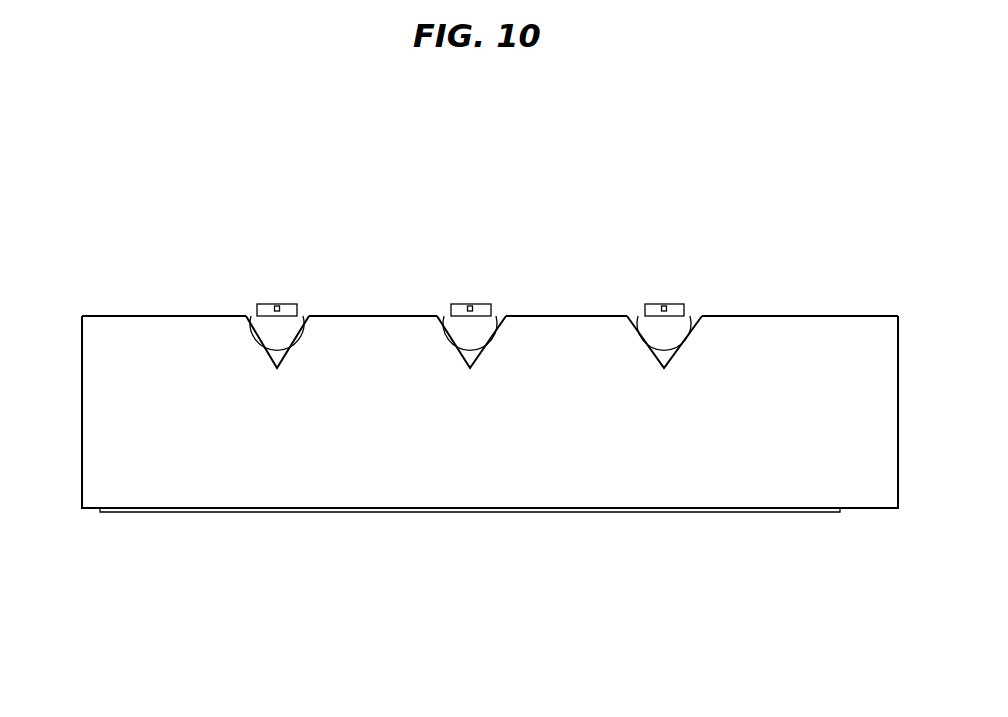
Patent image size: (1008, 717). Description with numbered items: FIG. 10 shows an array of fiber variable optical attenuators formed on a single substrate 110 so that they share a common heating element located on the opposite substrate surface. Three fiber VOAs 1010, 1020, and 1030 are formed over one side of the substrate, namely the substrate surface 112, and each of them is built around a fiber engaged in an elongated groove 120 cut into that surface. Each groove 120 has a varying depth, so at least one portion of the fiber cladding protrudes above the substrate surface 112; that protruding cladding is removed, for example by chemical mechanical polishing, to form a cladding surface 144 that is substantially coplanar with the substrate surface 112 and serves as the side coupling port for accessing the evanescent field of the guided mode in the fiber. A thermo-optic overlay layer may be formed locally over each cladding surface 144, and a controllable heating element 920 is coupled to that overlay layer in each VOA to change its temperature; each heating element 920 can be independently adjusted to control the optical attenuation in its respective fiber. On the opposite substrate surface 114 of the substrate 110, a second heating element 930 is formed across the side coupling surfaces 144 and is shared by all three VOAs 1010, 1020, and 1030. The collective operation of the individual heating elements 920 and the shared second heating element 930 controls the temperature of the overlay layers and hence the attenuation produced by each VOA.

The substrate 110 is at (518, 449).
The substrate surface 112 is at (773, 316).
The opposite substrate surface 114 is at (883, 508).
The elongated groove 120 is at (663, 357).
The cladding surface 144 is at (685, 315).
The controllable heating element 920 is at (689, 350).
The second heating element 930 is at (730, 513).
The fiber VOA 1010 is at (256, 274).
The fiber VOA 1020 is at (465, 276).
The fiber VOA 1030 is at (653, 311).